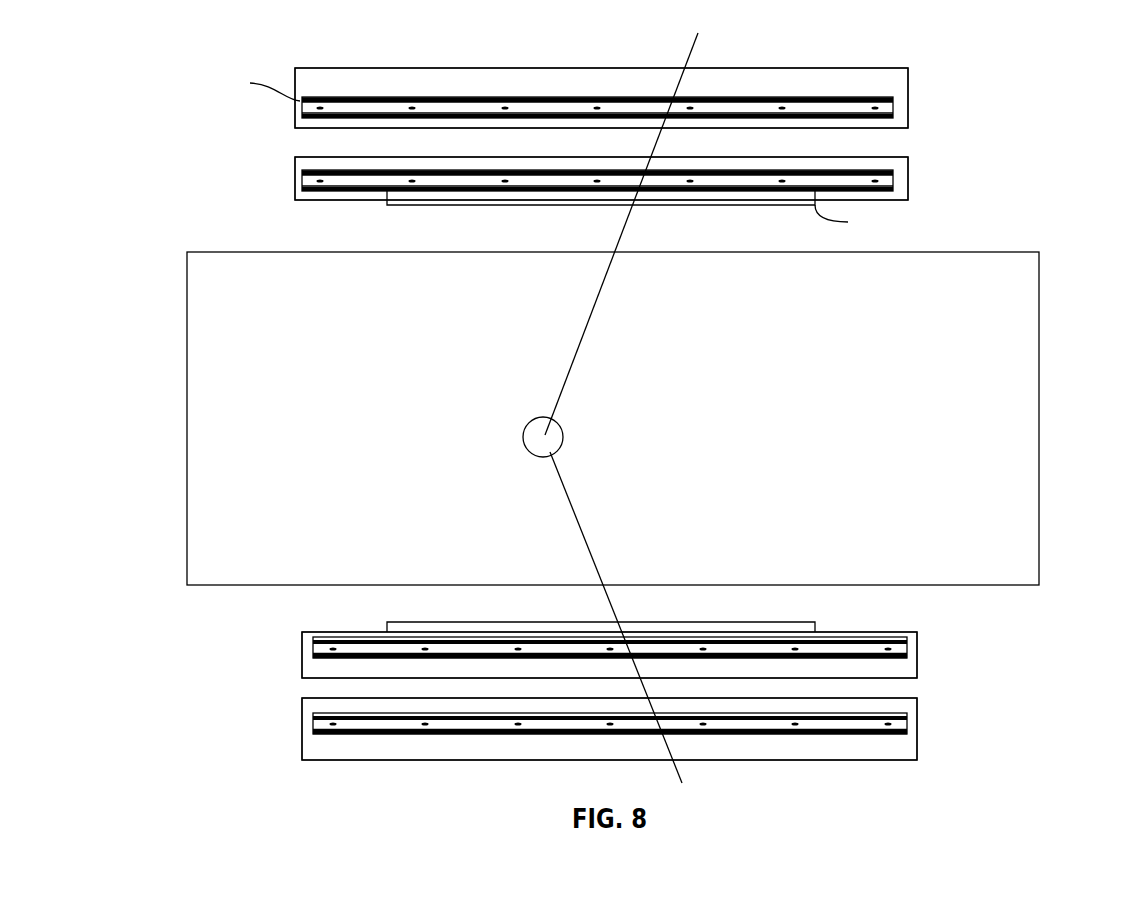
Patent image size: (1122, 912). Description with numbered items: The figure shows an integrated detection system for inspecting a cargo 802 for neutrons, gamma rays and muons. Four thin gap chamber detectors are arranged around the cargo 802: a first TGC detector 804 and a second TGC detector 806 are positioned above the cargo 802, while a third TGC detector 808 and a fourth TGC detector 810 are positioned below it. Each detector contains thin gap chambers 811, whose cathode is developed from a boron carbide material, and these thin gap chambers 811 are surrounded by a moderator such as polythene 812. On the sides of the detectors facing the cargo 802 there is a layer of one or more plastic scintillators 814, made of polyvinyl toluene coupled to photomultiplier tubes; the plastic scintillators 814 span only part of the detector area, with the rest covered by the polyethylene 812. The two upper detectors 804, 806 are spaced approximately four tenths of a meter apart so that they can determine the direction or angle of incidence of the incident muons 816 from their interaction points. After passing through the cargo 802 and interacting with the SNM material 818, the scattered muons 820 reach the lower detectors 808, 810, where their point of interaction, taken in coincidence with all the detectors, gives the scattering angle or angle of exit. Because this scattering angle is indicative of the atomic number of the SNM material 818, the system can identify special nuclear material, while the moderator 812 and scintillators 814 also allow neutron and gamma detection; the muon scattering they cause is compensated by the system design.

The cargo 802 is at (1040, 283).
The first TGC detector 804 is at (908, 98).
The second TGC detector 806 is at (908, 167).
The third TGC detector 808 is at (302, 655).
The fourth TGC detector 810 is at (302, 730).
The thin gap chambers 811 is at (390, 108).
The polythene moderator 812 is at (297, 125).
The plastic scintillators 814 is at (420, 206).
The incident muons 816 is at (622, 242).
The SNM material 818 is at (540, 442).
The scattered muons 820 is at (588, 543).